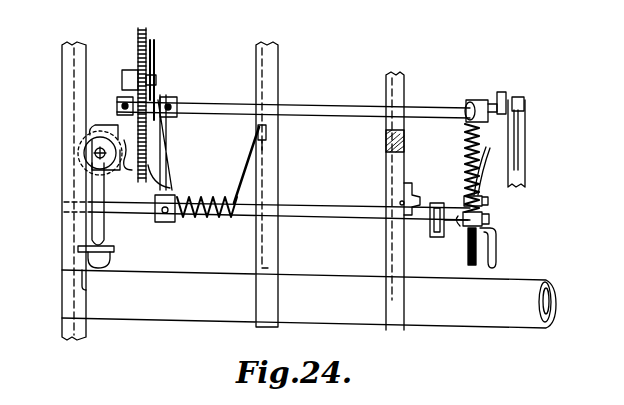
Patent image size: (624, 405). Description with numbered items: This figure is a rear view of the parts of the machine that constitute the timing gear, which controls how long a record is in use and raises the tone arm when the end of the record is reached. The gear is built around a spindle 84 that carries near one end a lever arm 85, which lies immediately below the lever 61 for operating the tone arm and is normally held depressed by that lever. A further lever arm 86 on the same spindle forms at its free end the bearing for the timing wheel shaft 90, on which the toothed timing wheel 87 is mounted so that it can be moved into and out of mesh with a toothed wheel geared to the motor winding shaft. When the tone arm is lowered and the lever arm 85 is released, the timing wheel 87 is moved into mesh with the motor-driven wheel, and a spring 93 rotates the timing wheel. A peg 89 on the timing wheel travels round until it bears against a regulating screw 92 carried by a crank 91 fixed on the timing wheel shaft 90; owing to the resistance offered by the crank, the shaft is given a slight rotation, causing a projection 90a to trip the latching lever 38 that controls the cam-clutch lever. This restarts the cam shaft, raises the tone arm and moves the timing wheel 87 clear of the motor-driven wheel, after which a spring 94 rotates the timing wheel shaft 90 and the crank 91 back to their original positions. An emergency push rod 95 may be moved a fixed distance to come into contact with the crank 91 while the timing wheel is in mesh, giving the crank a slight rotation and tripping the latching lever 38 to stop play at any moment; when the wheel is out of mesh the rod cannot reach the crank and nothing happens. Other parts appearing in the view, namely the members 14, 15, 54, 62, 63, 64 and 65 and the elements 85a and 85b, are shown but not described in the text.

The vertical post 14 is at (385, 172).
The vertical post 15 is at (275, 174).
The latching lever 38 is at (506, 92).
The bracket on post 54 is at (418, 195).
The lever for operating the tone arm 61 is at (490, 216).
The lever 62 is at (486, 163).
The lock nut 63 is at (489, 197).
The block 64 is at (520, 97).
The bar 65 is at (529, 146).
The spindle 84 is at (344, 216).
The lever arm 85 is at (430, 229).
The bent rod 85a is at (498, 250).
The inclined rod 85b is at (242, 165).
The lever arm 86 is at (168, 170).
The toothed timing wheel 87 is at (148, 30).
The peg 89 is at (131, 66).
The timing wheel shaft 90 is at (240, 100).
The projection 90a is at (470, 100).
The crank 91 is at (117, 126).
The regulating screw 92 is at (114, 168).
The spring 93 is at (153, 179).
The spring 94 is at (464, 143).
The push rod 95 is at (103, 226).